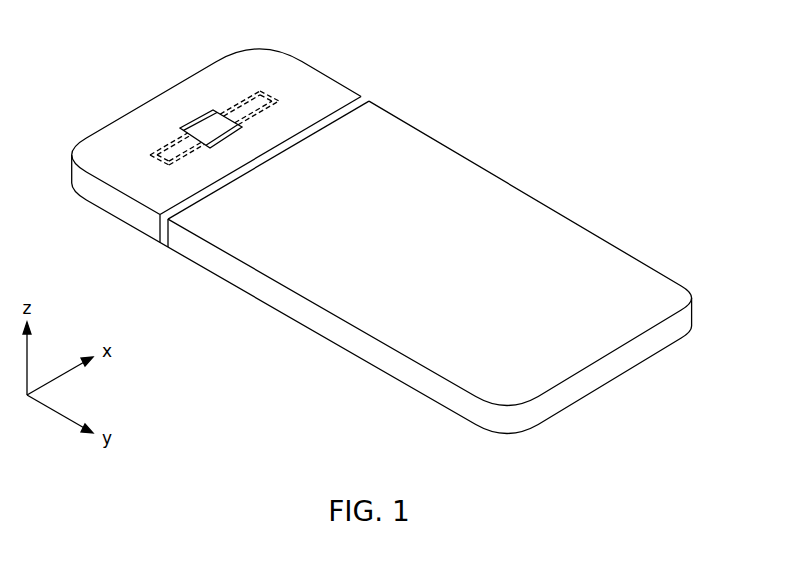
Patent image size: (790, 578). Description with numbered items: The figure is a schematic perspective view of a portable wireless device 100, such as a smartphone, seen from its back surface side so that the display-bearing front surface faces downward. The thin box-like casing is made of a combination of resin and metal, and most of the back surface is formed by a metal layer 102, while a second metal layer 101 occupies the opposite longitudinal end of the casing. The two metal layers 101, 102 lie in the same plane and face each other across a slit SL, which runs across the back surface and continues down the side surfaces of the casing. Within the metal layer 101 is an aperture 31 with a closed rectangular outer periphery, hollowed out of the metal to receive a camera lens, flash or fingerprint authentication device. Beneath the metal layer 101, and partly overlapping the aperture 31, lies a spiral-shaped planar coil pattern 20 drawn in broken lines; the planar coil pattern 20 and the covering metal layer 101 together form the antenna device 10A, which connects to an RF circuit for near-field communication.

The portable wireless device 100 is at (605, 33).
The metal layer 101 is at (180, 101).
The metal layer 102 is at (470, 186).
The slit SL is at (368, 100).
The antenna device 10A is at (212, 97).
The planar coil pattern 20 is at (280, 113).
The aperture 31 is at (190, 120).